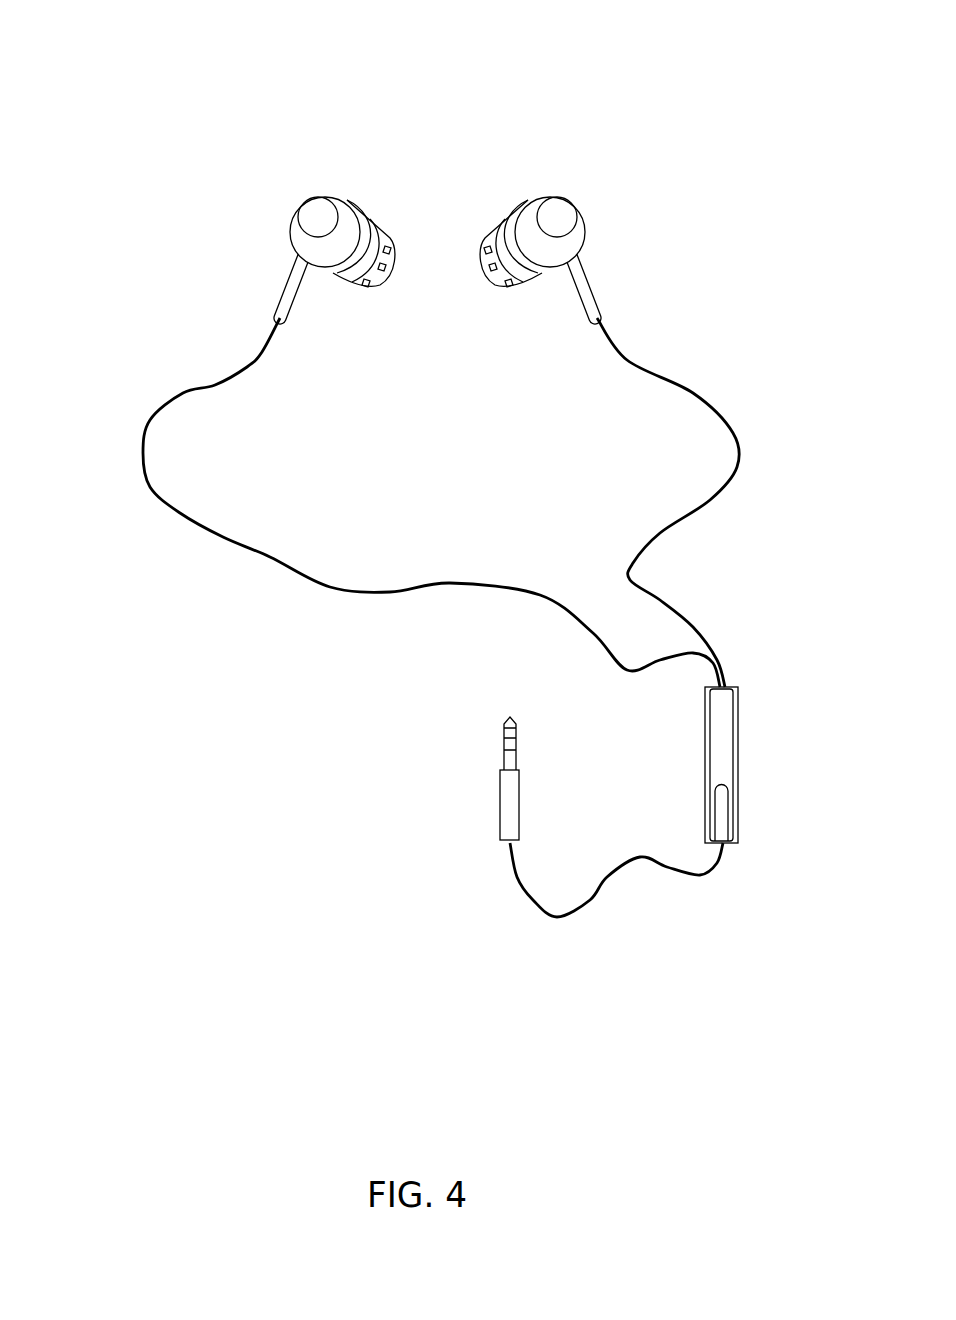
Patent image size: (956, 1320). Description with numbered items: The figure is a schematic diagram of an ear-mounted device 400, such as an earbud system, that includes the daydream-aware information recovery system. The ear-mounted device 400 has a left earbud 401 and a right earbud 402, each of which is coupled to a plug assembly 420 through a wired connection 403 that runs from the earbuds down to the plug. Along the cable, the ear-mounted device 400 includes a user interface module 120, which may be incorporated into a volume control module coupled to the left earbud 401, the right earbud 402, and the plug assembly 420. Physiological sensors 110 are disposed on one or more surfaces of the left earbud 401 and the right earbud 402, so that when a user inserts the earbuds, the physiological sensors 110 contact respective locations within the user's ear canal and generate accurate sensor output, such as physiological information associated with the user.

The ear-mounted device 400 is at (138, 64).
The left earbud 401 is at (255, 176).
The right earbud 402 is at (630, 176).
The physiological sensors 110 is at (387, 235).
The wired connection 403 is at (273, 557).
The user interface module 120 is at (738, 765).
The plug assembly 420 is at (500, 802).